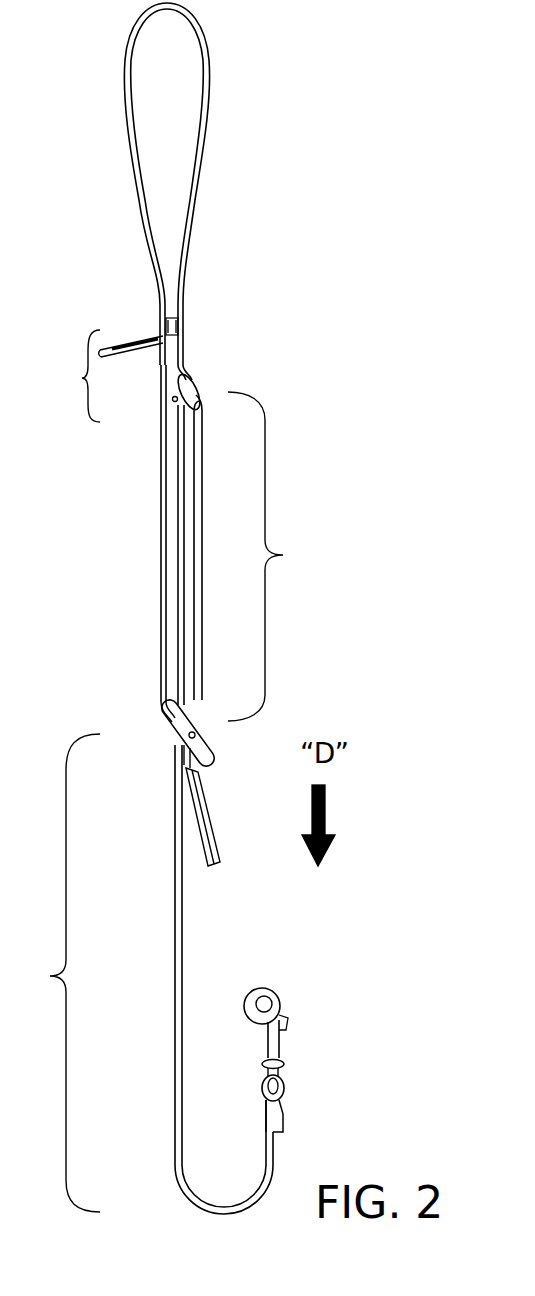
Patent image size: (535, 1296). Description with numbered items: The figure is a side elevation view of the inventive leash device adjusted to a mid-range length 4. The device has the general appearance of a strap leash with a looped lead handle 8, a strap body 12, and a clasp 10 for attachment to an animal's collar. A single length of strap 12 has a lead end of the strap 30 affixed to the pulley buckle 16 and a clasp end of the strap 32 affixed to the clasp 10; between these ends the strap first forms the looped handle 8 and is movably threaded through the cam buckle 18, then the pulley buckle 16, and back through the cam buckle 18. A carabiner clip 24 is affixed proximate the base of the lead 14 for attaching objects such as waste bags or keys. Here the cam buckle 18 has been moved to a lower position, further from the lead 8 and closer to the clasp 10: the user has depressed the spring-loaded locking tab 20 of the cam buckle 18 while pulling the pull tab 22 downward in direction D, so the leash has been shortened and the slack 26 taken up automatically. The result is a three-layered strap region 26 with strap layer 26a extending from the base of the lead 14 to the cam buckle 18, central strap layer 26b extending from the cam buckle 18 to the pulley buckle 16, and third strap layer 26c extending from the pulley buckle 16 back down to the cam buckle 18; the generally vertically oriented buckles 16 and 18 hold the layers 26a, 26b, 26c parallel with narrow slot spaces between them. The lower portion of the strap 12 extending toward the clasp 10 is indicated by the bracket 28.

The mid-range length 4 is at (283, 292).
The looped lead handle 8 is at (210, 122).
The clasp 10 is at (272, 988).
The strap body 12 is at (172, 983).
The base of the lead 14 is at (105, 376).
The pulley buckle 16 is at (192, 388).
The cam buckle 18 is at (165, 727).
The spring-loaded locking tab 20 is at (205, 742).
The pull tab 22 is at (216, 848).
The carabiner clip 24 is at (134, 346).
The slack 26 is at (200, 543).
The strap layer 26a is at (165, 500).
The central strap layer 26b is at (180, 562).
The third strap layer 26c is at (198, 627).
The lower leash portion 28 is at (141, 974).
The lead end of the strap 30 is at (172, 328).
The clasp end of the strap 32 is at (286, 1118).